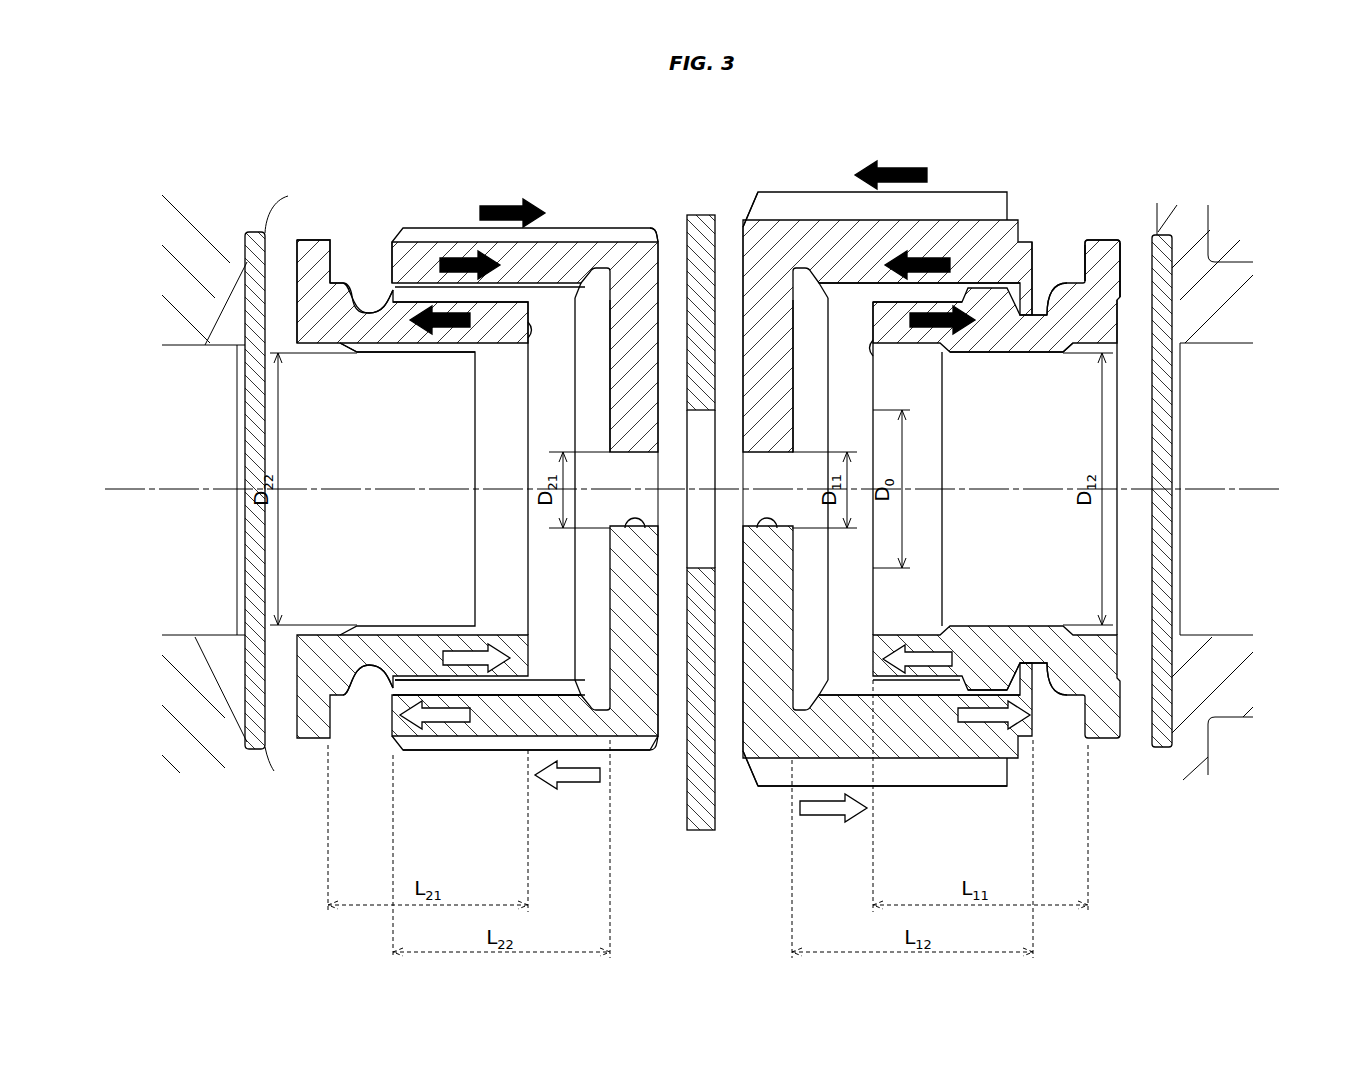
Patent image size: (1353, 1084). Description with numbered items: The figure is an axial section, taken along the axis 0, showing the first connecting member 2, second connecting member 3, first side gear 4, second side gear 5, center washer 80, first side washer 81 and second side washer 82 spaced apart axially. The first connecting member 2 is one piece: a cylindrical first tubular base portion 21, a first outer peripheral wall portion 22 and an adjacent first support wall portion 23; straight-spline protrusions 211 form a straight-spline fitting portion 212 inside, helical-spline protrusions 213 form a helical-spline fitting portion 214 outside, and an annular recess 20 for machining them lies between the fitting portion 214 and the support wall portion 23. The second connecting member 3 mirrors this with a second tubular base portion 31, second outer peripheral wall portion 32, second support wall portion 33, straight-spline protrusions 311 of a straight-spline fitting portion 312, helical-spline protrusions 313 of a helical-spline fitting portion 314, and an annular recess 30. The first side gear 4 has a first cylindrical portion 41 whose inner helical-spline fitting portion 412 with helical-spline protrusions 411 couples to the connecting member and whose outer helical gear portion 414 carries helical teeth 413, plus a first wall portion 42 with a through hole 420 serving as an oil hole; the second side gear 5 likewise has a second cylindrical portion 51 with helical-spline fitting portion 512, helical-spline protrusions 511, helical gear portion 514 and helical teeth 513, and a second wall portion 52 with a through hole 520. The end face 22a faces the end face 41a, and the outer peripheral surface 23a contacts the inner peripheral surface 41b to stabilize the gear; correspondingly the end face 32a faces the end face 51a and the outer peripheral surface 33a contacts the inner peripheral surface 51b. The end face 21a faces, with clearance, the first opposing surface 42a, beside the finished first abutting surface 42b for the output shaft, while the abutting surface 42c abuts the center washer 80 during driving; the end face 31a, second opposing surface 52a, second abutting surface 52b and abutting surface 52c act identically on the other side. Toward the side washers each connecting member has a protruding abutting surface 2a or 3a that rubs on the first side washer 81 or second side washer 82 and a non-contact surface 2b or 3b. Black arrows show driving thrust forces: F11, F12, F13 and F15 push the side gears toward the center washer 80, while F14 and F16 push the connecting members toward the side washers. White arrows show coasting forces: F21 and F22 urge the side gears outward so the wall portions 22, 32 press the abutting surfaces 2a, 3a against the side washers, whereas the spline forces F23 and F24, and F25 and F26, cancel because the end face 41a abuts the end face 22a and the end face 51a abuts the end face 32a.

The axis 0 is at (1245, 488).
The first connecting member 2 is at (1105, 742).
The abutting surface 2a is at (1120, 275).
The non-contact surface 2b is at (1120, 318).
The second connecting member 3 is at (312, 742).
The abutting surface 3a is at (297, 273).
The non-contact surface 3b is at (297, 318).
The first side gear 4 is at (847, 157).
The second side gear 5 is at (570, 157).
The annular recess 20 is at (1054, 699).
The first tubular base portion 21 is at (980, 340).
The end face 21a is at (875, 348).
The first outer peripheral wall portion 22 is at (1110, 245).
The end face 22a is at (1085, 257).
The first support wall portion 23 is at (1062, 283).
The outer peripheral surface 23a is at (1072, 293).
The annular recess 30 is at (381, 698).
The second tubular base portion 31 is at (447, 340).
The end face 31a is at (537, 330).
The second outer peripheral wall portion 32 is at (313, 250).
The end face 32a is at (338, 278).
The second support wall portion 33 is at (363, 290).
The outer peripheral surface 33a is at (345, 280).
The first cylindrical portion 41 is at (857, 257).
The end face 41a is at (1033, 275).
The inner peripheral surface 41b is at (1005, 280).
The first wall portion 42 is at (770, 300).
The first opposing surface 42a is at (793, 317).
The first abutting surface 42b is at (793, 360).
The abutting surface 42c is at (743, 300).
The second cylindrical portion 51 is at (537, 260).
The end face 51a is at (392, 250).
The inner peripheral surface 51b is at (410, 290).
The second wall portion 52 is at (632, 297).
The second opposing surface 52a is at (610, 317).
The second abutting surface 52b is at (610, 343).
The abutting surface 52c is at (660, 300).
The center washer 80 is at (703, 225).
The first side washer 81 is at (1160, 245).
The second side washer 82 is at (257, 240).
The straight-spline protrusions 211 is at (1053, 356).
The straight-spline fitting portion 212 is at (1004, 366).
The helical-spline protrusions 213 is at (987, 686).
The helical-spline fitting portion 214 is at (998, 688).
The straight-spline protrusions 311 is at (372, 352).
The straight-spline fitting portion 312 is at (379, 366).
The helical-spline protrusions 313 is at (427, 687).
The helical-spline fitting portion 314 is at (412, 680).
The helical-spline protrusions 411 is at (932, 688).
The helical-spline fitting portion 412 is at (898, 688).
The helical teeth 413 is at (882, 770).
The helical gear portion 414 is at (780, 770).
The through hole 420 is at (780, 530).
The helical-spline protrusions 511 is at (448, 682).
The helical-spline fitting portion 512 is at (488, 688).
The helical teeth 513 is at (520, 745).
The helical gear portion 514 is at (630, 760).
The through hole 520 is at (620, 530).
The axial thrust force F11 is at (898, 162).
The axial thrust force F12 is at (505, 200).
The axial thrust force F13 is at (917, 258).
The axial thrust force F14 is at (940, 332).
The axial thrust force F15 is at (463, 256).
The axial thrust force F16 is at (480, 330).
The axial thrust force F21 is at (830, 822).
The axial thrust force F22 is at (570, 790).
The axial thrust force F23 is at (1000, 730).
The axial thrust force F24 is at (920, 645).
The axial thrust force F25 is at (440, 729).
The axial thrust force F26 is at (480, 645).